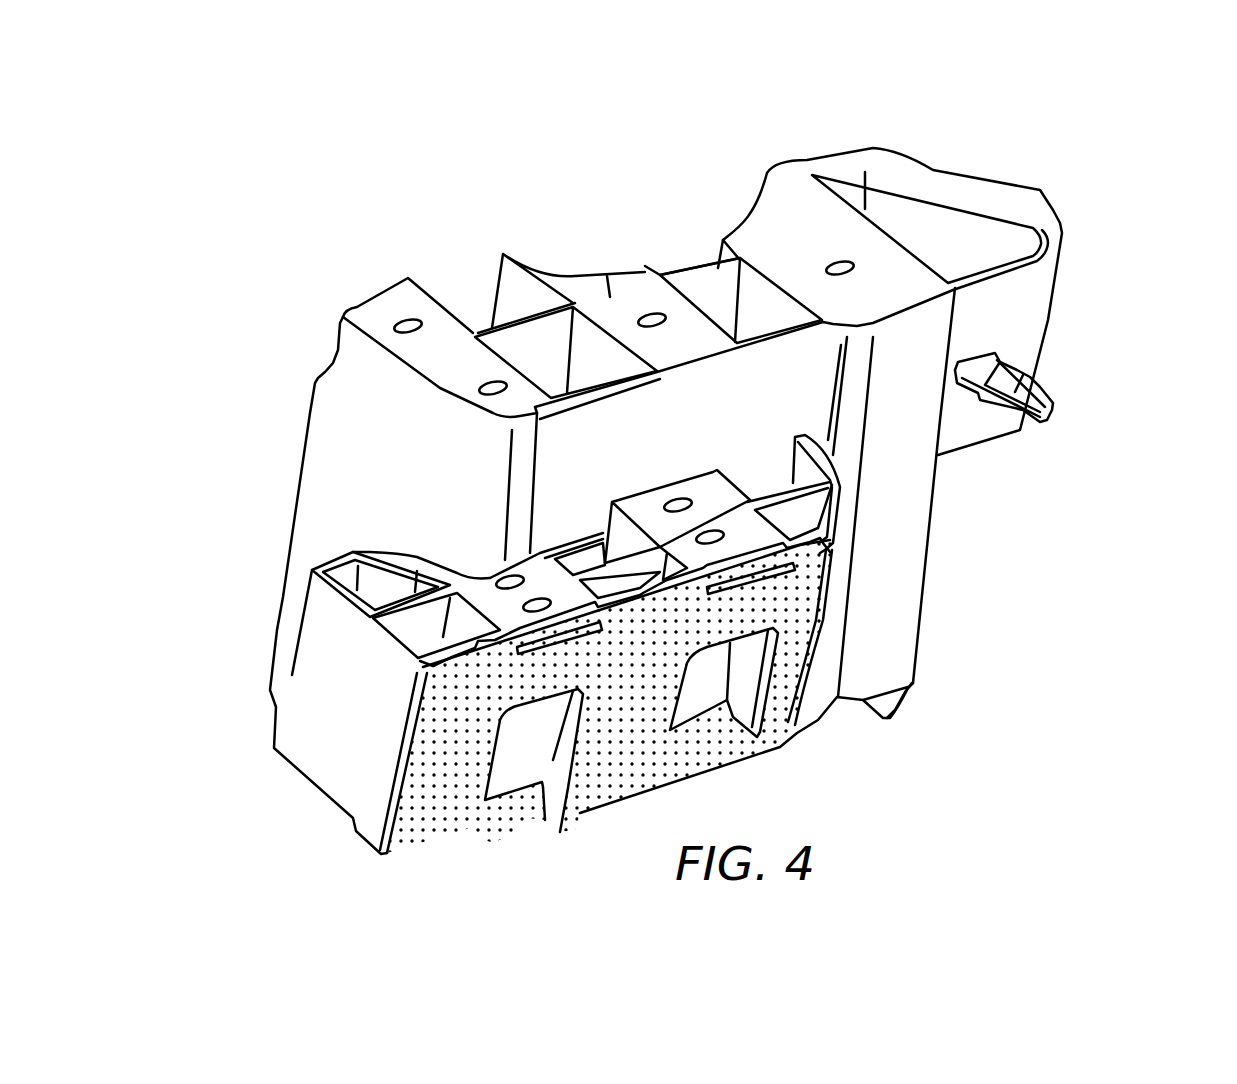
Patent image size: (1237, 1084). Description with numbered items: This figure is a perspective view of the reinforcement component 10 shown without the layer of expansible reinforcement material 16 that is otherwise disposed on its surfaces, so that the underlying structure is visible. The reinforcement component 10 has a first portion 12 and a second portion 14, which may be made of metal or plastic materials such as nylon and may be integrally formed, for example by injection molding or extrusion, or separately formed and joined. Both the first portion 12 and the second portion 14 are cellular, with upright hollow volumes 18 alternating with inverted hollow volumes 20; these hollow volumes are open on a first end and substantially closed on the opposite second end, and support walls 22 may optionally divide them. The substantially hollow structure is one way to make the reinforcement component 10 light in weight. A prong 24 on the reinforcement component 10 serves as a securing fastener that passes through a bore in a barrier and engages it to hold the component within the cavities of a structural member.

The reinforcement component 10 is at (1155, 335).
The first portion 12 is at (330, 770).
The second portion 14 is at (943, 182).
The expansible reinforcement material 16 is at (433, 810).
The upright hollow volumes 18 is at (527, 343).
The inverted hollow volumes 20 is at (793, 190).
The support walls 22 is at (372, 618).
The prong 24 is at (1033, 382).